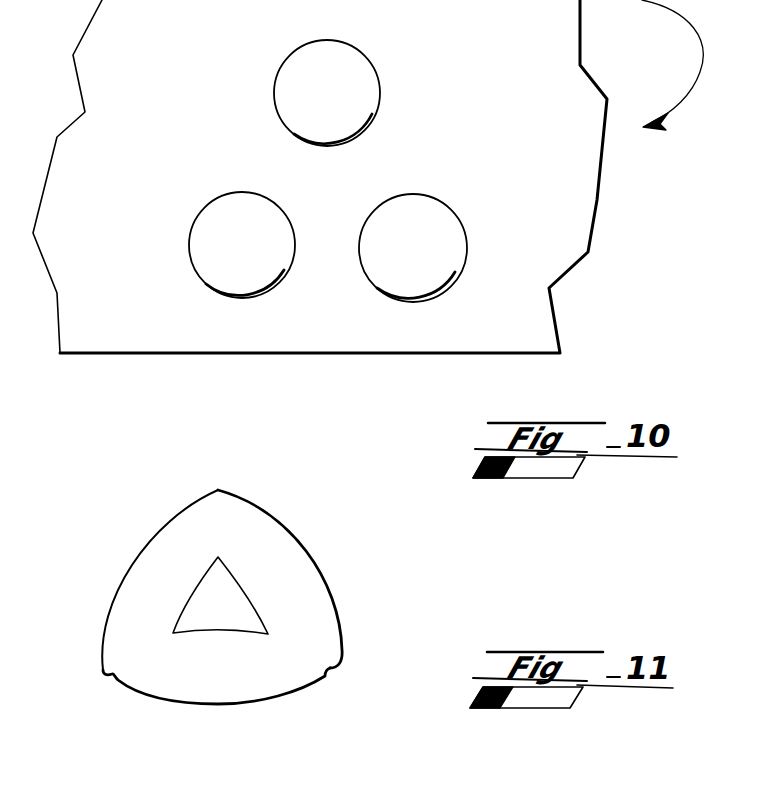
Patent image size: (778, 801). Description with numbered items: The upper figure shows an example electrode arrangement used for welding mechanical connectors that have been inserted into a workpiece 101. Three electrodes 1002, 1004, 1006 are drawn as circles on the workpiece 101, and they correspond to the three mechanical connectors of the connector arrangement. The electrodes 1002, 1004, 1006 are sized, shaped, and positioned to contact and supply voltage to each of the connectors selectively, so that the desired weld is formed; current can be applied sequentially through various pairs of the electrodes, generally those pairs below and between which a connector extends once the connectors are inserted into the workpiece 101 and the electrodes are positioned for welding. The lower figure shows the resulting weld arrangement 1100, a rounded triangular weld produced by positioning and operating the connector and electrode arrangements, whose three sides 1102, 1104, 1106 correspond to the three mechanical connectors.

In FIG. 10, the workpiece 101 is at (185, 54).
In FIG. 10, the electrode 1002 is at (378, 112).
In FIG. 10, the electrode 1004 is at (437, 195).
In FIG. 10, the electrode 1006 is at (192, 224).
In FIG. 11, the weld arrangement 1100 is at (271, 596).
In FIG. 11, the side 1102 is at (143, 548).
In FIG. 11, the side 1104 is at (280, 522).
In FIG. 11, the side 1106 is at (245, 705).